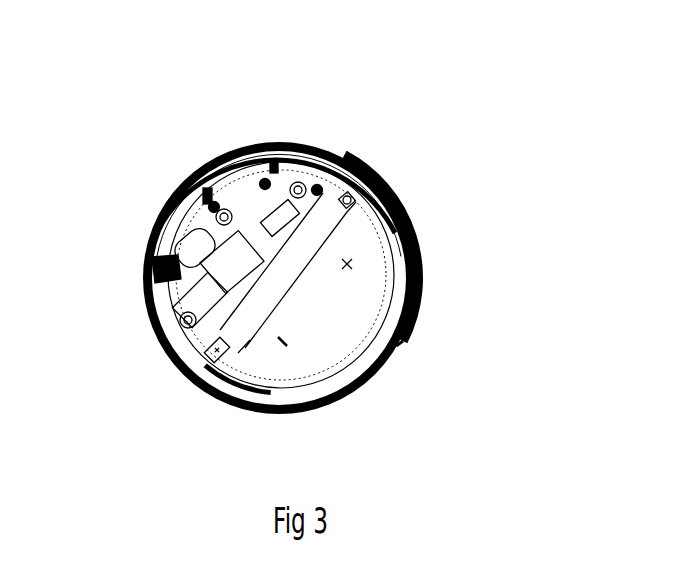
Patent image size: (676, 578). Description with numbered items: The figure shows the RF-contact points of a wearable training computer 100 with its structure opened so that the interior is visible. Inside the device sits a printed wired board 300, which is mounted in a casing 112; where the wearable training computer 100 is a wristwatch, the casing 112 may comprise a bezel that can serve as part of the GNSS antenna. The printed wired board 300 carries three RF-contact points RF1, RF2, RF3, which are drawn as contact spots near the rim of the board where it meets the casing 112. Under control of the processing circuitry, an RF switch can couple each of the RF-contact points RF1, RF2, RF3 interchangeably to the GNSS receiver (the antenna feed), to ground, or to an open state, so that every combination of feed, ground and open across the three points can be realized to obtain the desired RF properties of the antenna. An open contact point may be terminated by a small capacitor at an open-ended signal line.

The wearable training computer 100 is at (136, 114).
The casing 112 is at (413, 220).
The printed wired board 300 is at (270, 252).
The RF-contact point RF1 is at (266, 179).
The RF-contact point RF2 is at (214, 202).
The RF-contact point RF3 is at (318, 185).